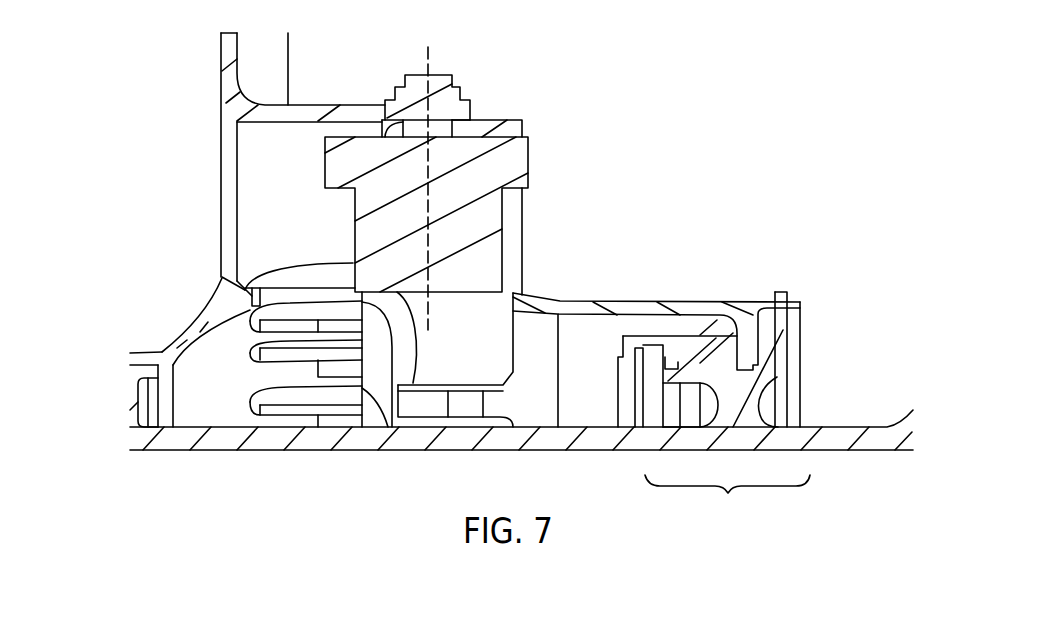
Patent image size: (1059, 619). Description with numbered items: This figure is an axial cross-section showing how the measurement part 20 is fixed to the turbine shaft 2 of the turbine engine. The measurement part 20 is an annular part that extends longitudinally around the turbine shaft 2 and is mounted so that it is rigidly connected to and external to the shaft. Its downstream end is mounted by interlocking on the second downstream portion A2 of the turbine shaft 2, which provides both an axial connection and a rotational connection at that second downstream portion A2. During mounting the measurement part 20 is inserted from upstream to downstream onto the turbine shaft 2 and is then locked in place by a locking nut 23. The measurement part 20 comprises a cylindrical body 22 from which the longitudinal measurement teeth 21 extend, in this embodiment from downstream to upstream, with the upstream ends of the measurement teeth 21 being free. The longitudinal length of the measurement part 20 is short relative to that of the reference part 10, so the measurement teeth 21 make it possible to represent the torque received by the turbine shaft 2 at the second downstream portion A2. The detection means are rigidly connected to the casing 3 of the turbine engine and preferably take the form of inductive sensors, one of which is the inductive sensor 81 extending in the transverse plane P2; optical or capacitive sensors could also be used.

The turbine shaft 2 is at (757, 420).
The casing 3 is at (325, 112).
The reference part 10 is at (219, 295).
The measurement part 20 is at (633, 288).
The measurement teeth 21 is at (445, 383).
The cylindrical body 22 is at (578, 300).
The locking nut 23 is at (672, 357).
The inductive sensor 81 is at (513, 160).
The transverse plane P2 is at (430, 171).
The second downstream portion A2 is at (727, 499).